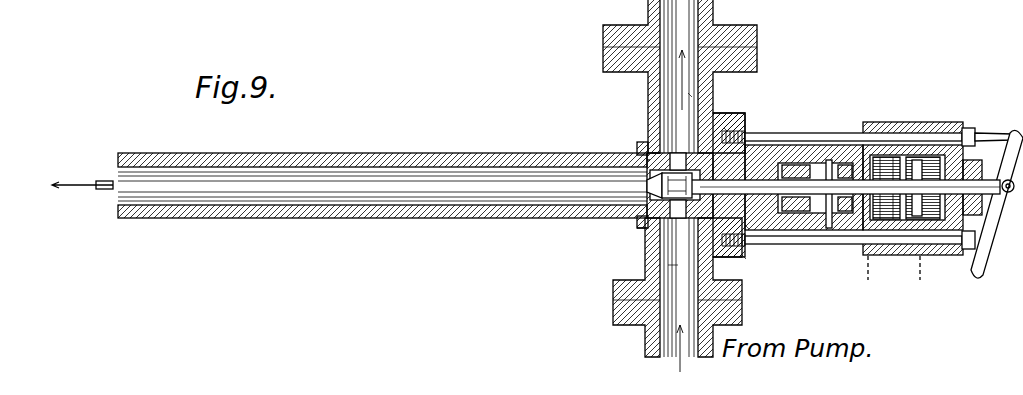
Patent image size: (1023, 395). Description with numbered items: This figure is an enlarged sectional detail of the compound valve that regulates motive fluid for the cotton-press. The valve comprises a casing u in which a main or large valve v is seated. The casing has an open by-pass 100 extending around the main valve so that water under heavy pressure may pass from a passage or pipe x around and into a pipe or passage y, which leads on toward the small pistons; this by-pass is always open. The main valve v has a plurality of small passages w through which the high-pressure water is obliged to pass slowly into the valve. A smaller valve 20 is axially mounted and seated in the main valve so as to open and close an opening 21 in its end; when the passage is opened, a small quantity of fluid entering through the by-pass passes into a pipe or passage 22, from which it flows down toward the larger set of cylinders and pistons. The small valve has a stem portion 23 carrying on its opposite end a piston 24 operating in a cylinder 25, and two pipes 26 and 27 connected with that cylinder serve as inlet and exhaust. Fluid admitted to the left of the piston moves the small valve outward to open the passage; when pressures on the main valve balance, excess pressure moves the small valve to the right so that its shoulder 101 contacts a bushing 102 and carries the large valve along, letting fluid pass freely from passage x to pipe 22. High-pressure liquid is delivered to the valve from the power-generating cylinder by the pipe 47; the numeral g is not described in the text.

The upper supply pipe g is at (652, 9).
The smaller valve 20 is at (662, 226).
The opening 21 is at (663, 198).
The pipe or passage 22 is at (364, 219).
The stem portion 23 is at (796, 186).
The piston 24 is at (895, 165).
The cylinder 25 is at (933, 156).
The pipe 26 is at (866, 280).
The pipe 27 is at (920, 280).
The pipe 47 is at (645, 345).
The open by-pass 100 is at (640, 229).
The shoulder 101 is at (747, 227).
The bushing 102 is at (728, 131).
The casing u is at (745, 257).
The main or large valve v is at (652, 158).
The small passages w is at (655, 153).
The passage or pipe x is at (673, 264).
The pipe or passage y is at (690, 97).